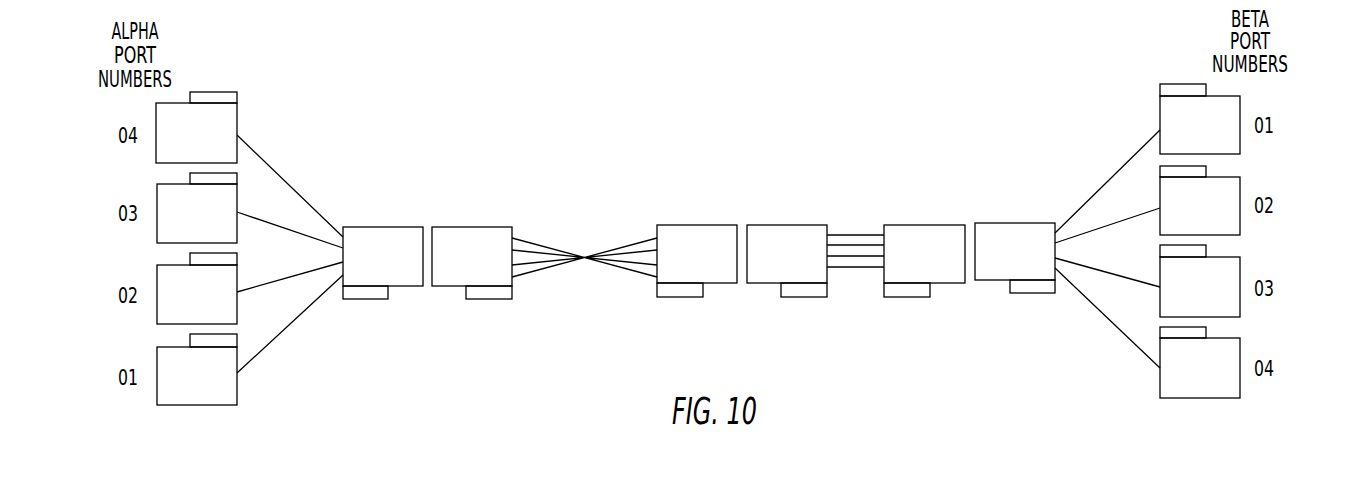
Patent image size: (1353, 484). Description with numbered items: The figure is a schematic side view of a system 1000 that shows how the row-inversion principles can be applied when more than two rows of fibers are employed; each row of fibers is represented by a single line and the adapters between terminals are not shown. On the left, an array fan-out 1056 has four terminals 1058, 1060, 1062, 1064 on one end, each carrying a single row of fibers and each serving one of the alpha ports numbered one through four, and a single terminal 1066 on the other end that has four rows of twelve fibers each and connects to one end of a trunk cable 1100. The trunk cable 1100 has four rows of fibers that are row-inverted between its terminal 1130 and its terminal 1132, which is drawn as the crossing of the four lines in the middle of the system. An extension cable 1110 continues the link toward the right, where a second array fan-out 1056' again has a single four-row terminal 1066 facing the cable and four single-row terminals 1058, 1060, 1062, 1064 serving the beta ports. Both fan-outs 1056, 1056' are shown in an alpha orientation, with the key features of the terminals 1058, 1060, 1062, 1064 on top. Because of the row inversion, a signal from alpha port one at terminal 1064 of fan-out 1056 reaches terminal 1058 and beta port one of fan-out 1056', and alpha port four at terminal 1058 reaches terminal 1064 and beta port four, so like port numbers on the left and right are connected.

The system 1000 is at (860, 148).
The array fan-out 1056 is at (359, 219).
The array fan-out 1056' is at (1015, 186).
The terminal 1058 is at (173, 110).
The terminal 1060 is at (167, 200).
The terminal 1062 is at (167, 285).
The terminal 1064 is at (167, 372).
The single terminal 1066 is at (398, 278).
The trunk cable 1100 is at (586, 244).
The extension cable 1110 is at (858, 278).
The terminal 1130 is at (455, 232).
The terminal 1132 is at (695, 232).